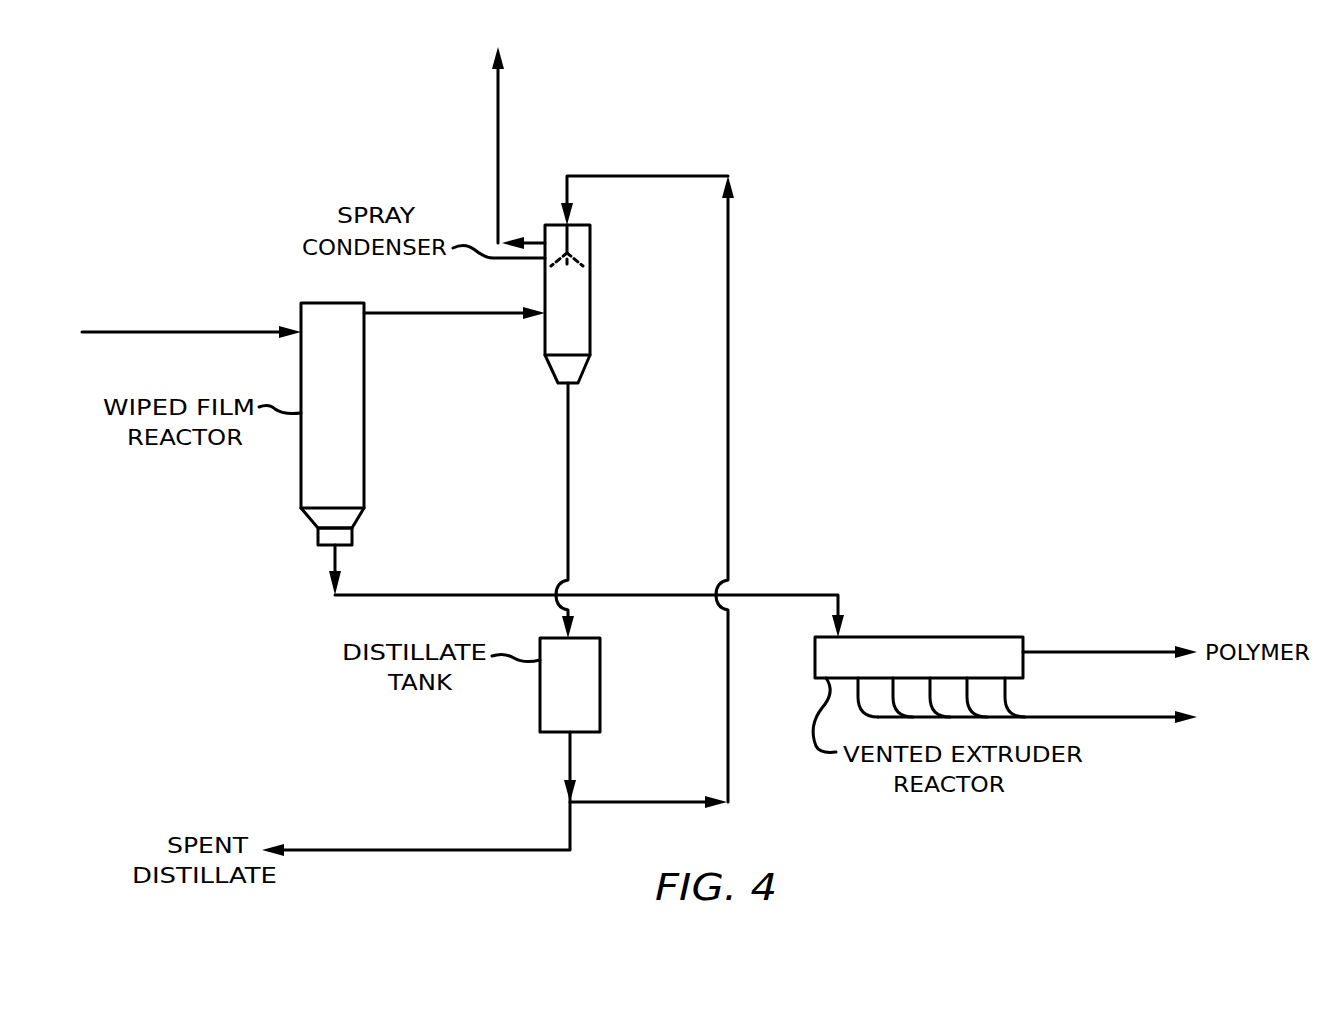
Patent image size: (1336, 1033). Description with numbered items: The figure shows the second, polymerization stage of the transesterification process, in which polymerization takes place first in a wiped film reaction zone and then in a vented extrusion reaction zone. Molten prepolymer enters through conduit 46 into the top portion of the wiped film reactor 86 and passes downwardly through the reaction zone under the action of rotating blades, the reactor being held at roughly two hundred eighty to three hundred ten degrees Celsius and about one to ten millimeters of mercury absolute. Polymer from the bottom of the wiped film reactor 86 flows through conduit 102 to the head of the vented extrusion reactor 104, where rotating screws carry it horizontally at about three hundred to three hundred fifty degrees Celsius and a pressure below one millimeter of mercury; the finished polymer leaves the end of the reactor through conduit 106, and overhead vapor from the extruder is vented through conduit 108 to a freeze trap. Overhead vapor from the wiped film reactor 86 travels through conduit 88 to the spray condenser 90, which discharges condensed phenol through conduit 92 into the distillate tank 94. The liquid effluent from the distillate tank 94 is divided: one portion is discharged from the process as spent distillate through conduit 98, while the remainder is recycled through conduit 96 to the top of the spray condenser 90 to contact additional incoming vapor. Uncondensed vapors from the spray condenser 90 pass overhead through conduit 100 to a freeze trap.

The conduit 46 is at (224, 332).
The wiped film reactor 86 is at (364, 468).
The conduit 88 is at (423, 313).
The spray condenser 90 is at (590, 313).
The conduit 92 is at (568, 450).
The distillate tank 94 is at (600, 692).
The conduit 96 is at (728, 690).
The conduit 98 is at (570, 768).
The conduit 100 is at (498, 115).
The conduit 102 is at (420, 595).
The vented extrusion reactor 104 is at (943, 637).
The conduit 106 is at (1085, 652).
The conduit 108 is at (1085, 717).